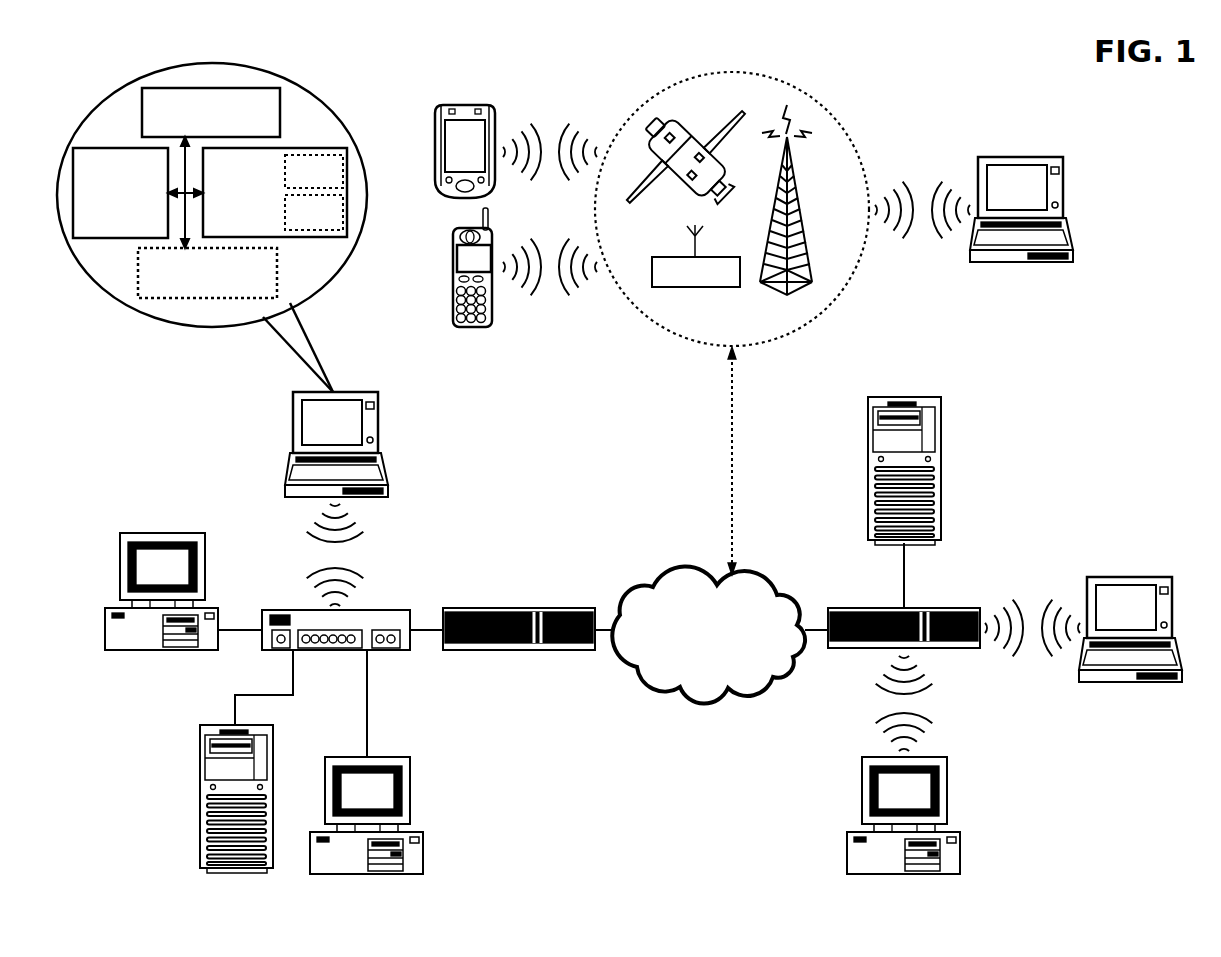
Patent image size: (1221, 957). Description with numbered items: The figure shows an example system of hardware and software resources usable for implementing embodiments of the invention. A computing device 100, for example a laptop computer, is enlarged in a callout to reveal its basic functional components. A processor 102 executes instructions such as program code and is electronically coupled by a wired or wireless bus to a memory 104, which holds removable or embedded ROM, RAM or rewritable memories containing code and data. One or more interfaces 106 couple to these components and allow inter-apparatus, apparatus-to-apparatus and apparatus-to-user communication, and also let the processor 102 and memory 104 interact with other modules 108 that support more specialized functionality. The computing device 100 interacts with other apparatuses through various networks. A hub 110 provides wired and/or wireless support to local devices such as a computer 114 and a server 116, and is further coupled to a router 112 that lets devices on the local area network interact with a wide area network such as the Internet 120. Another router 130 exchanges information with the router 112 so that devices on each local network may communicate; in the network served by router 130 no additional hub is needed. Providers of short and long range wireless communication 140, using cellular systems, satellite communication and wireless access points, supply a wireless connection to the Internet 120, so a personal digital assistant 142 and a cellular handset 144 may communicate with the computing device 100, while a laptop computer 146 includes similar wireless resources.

The computing device 100 is at (317, 432).
The processor 102 is at (120, 193).
The memory 104 is at (275, 192).
The interfaces 106 is at (211, 112).
The other modules 108 is at (207, 273).
The hub 110 is at (342, 601).
The router 112 is at (525, 600).
The computer 114 is at (143, 591).
The server 116 is at (214, 799).
The Internet 120 is at (702, 656).
The router 130 is at (905, 599).
The provider of wireless communication 140 is at (746, 208).
The personal digital assistant 142 is at (442, 146).
The cellular handset 144 is at (450, 267).
The laptop computer 146 is at (1039, 196).